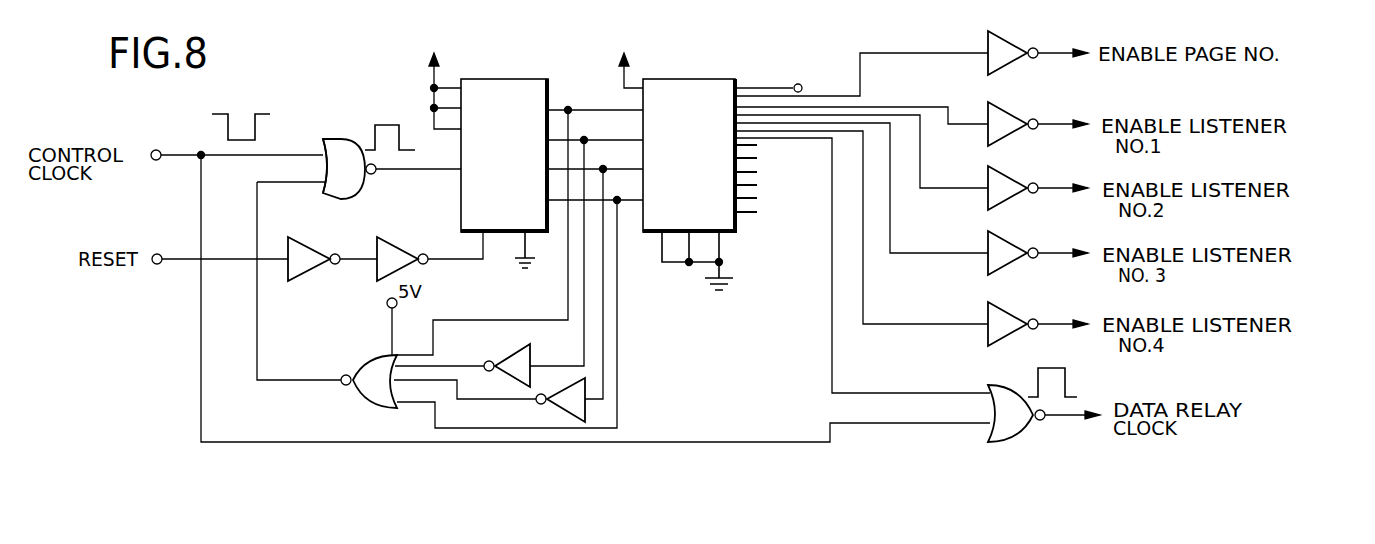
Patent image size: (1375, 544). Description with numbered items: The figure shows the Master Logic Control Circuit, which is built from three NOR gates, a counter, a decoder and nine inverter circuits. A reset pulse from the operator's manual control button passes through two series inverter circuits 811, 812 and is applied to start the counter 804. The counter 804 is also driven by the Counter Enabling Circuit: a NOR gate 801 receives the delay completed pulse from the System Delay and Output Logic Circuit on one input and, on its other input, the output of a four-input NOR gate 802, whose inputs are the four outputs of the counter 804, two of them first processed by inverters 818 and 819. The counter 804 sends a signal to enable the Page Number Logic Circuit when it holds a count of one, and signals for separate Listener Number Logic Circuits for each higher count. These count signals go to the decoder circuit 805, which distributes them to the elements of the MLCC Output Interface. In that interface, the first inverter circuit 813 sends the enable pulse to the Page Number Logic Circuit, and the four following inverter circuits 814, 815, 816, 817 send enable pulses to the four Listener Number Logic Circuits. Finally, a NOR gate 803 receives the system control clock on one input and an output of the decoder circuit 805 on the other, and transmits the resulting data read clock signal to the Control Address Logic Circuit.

The NOR gate 801 is at (335, 137).
The NOR gate 802 is at (372, 367).
The NOR gate 803 is at (995, 385).
The counter 804 is at (505, 79).
The decoder circuit 805 is at (688, 79).
The inverter circuit 811 is at (310, 240).
The inverter circuit 812 is at (406, 243).
The first inverter circuit 813 is at (1003, 35).
The inverter circuit 814 is at (1003, 107).
The inverter circuit 815 is at (1003, 172).
The inverter circuit 816 is at (1003, 237).
The inverter circuit 817 is at (1003, 307).
The inverter 818 is at (510, 352).
The inverter 819 is at (553, 405).